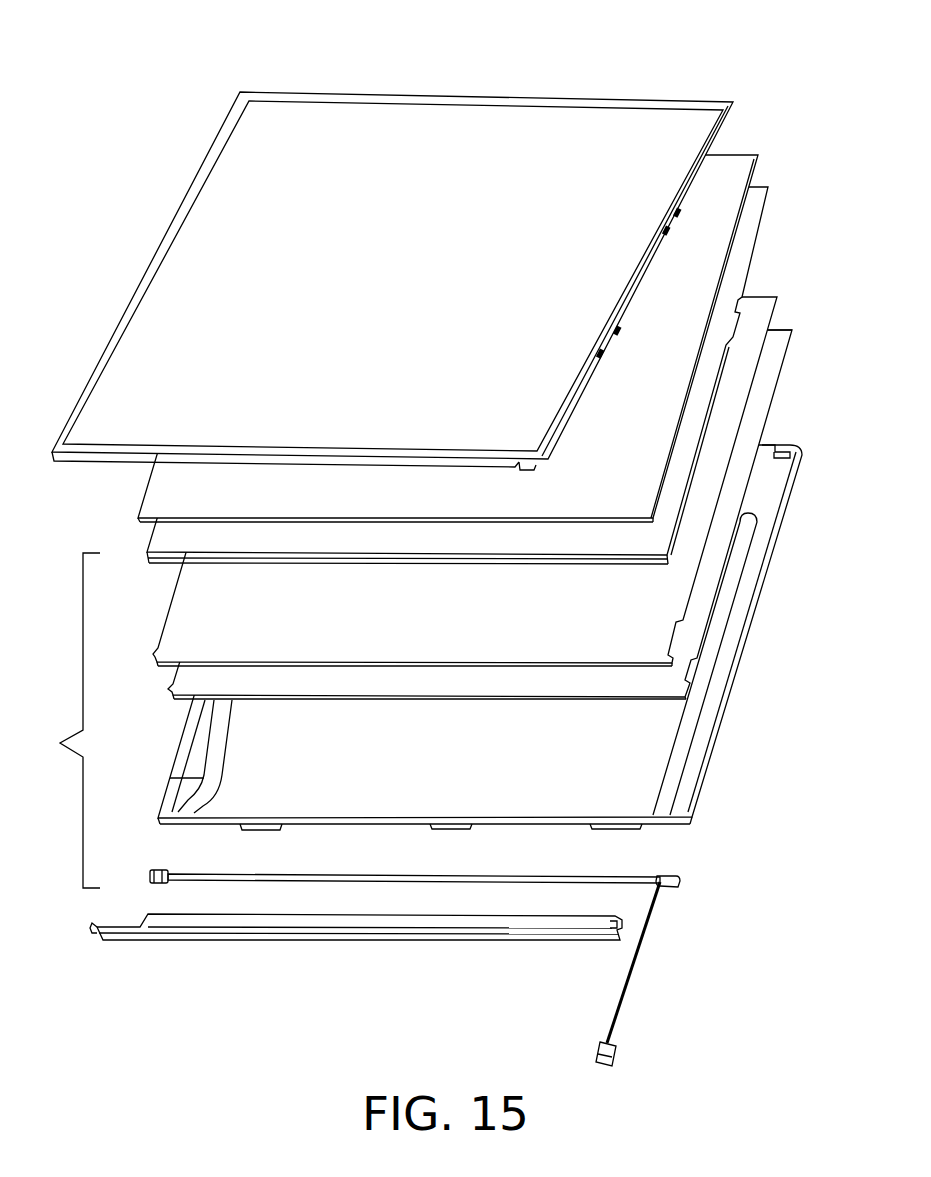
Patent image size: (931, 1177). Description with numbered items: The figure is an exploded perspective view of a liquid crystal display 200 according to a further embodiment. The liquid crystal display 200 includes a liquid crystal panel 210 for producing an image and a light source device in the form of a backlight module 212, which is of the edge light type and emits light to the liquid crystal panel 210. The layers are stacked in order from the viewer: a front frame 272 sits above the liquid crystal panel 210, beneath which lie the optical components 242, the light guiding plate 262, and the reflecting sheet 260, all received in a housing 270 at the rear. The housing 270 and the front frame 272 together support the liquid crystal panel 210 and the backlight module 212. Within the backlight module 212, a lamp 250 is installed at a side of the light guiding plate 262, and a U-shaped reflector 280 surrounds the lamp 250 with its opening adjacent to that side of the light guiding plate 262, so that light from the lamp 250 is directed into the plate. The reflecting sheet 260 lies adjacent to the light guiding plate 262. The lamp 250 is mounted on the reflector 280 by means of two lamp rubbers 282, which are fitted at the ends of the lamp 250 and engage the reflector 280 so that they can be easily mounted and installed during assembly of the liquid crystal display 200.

The liquid crystal display 200 is at (105, 89).
The front frame 272 is at (706, 101).
The liquid crystal panel 210 is at (733, 168).
The optical sheets 242 is at (757, 197).
The light guiding plate 262 is at (755, 305).
The reflecting sheet 260 is at (780, 342).
The housing 270 is at (795, 445).
The backlight module 212 is at (56, 720).
The lamp 250 is at (637, 877).
The lamp rubbers 282 is at (152, 872).
The U-shaped reflector 280 is at (572, 943).